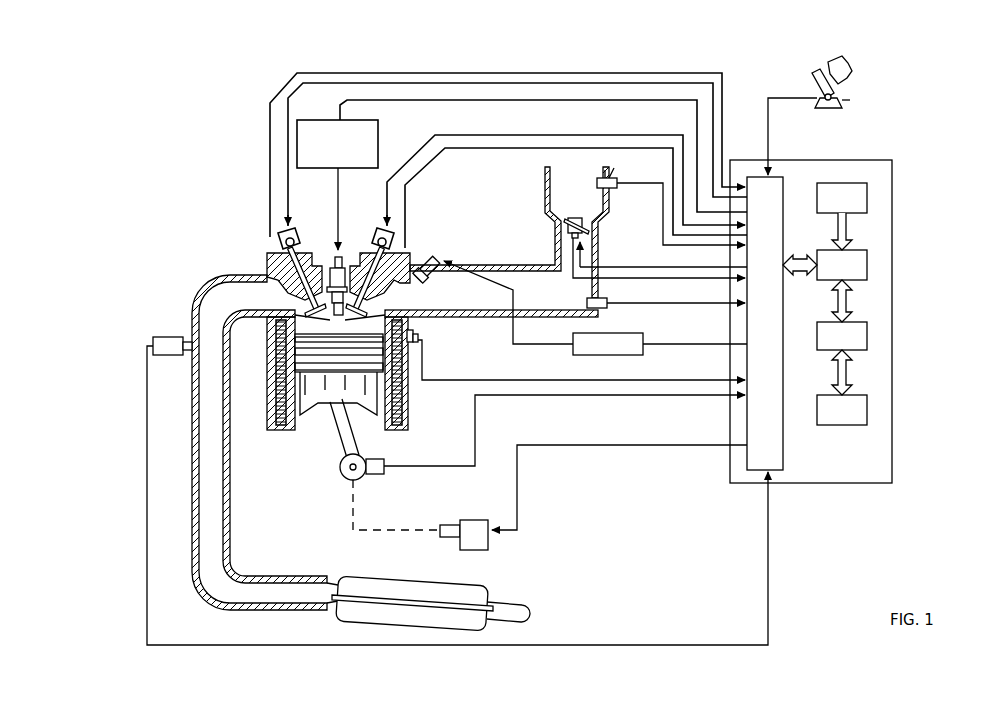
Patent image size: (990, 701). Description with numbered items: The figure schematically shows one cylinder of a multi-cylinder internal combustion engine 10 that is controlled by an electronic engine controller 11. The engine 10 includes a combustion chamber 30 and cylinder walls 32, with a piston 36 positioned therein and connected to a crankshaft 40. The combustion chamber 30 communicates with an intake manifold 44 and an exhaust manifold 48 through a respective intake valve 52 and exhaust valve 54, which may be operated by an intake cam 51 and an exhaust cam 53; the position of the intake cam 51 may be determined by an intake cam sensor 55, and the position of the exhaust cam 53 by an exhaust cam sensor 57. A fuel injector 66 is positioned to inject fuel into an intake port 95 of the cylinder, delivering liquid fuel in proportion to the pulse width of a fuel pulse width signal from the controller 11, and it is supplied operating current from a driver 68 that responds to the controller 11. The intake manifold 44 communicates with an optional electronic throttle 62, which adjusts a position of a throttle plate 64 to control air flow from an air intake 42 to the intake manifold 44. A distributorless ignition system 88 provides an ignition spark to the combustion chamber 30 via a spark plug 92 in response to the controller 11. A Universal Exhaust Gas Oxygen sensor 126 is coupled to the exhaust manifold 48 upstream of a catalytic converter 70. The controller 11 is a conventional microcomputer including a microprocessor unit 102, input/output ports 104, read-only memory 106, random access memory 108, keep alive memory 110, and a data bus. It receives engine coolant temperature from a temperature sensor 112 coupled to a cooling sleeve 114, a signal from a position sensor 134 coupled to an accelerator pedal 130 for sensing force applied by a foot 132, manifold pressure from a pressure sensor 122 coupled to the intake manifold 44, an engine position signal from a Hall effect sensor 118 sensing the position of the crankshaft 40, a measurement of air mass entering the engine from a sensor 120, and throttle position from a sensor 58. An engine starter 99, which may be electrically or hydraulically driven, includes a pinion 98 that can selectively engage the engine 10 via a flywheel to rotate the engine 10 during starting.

The internal combustion engine 10 is at (220, 219).
The electronic engine controller 11 is at (882, 162).
The combustion chamber 30 is at (337, 325).
The cylinder walls 32 is at (363, 396).
The piston 36 is at (325, 407).
The crankshaft 40 is at (345, 483).
The air intake 42 is at (569, 201).
The intake manifold 44 is at (522, 301).
The exhaust manifold 48 is at (235, 305).
The intake cam 51 is at (378, 230).
The intake valve 52 is at (368, 297).
The exhaust cam 53 is at (292, 230).
The exhaust valve 54 is at (308, 304).
The intake cam sensor 55 is at (392, 243).
The exhaust cam sensor 57 is at (283, 240).
The throttle position sensor 58 is at (560, 238).
The electronic throttle 62 is at (592, 223).
The throttle plate 64 is at (563, 225).
The fuel injector 66 is at (433, 257).
The driver 68 is at (590, 355).
The catalytic converter 70 is at (352, 575).
The distributorless ignition system 88 is at (306, 120).
The spark plug 92 is at (341, 256).
The intake port 95 is at (378, 306).
The pinion 98 is at (450, 523).
The engine starter 99 is at (482, 550).
The microprocessor unit 102 is at (868, 260).
The input/output ports 104 is at (785, 183).
The read-only memory 106 is at (868, 195).
The random access memory 108 is at (868, 335).
The keep alive memory 110 is at (868, 408).
The temperature sensor 112 is at (421, 346).
The cooling sleeve 114 is at (408, 397).
The Hall effect sensor 118 is at (366, 477).
The air mass sensor 120 is at (615, 178).
The pressure sensor 122 is at (610, 308).
The Universal Exhaust Gas Oxygen sensor 126 is at (153, 340).
The accelerator pedal 130 is at (852, 109).
The foot 132 is at (848, 70).
The position sensor 134 is at (850, 100).